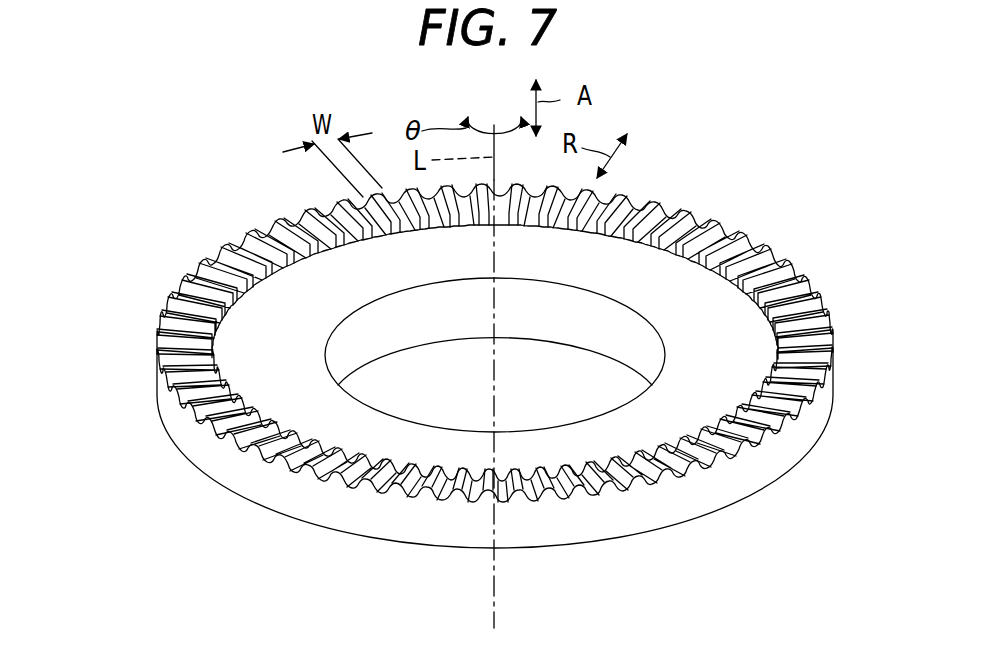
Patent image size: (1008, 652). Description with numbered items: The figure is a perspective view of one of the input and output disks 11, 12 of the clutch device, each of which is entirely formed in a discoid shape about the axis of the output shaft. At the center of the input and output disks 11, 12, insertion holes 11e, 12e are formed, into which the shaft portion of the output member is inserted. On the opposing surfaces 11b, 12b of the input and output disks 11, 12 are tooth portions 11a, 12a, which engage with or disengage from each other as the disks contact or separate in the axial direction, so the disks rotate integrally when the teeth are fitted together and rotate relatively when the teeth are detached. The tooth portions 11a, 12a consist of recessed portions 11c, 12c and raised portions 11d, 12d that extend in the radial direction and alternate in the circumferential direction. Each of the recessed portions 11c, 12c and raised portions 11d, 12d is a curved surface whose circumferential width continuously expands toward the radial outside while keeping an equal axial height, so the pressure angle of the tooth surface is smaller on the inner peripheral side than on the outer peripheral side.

The gear (face gear) 11, 12 is at (650, 171).
The teeth 11a, 12a is at (772, 262).
The top surface of gear 11b, 12b is at (718, 306).
The tooth root portion 11c, 12c is at (308, 210).
The tooth tip portion 11d, 12d is at (313, 207).
The center hole 11e, 12e is at (532, 314).